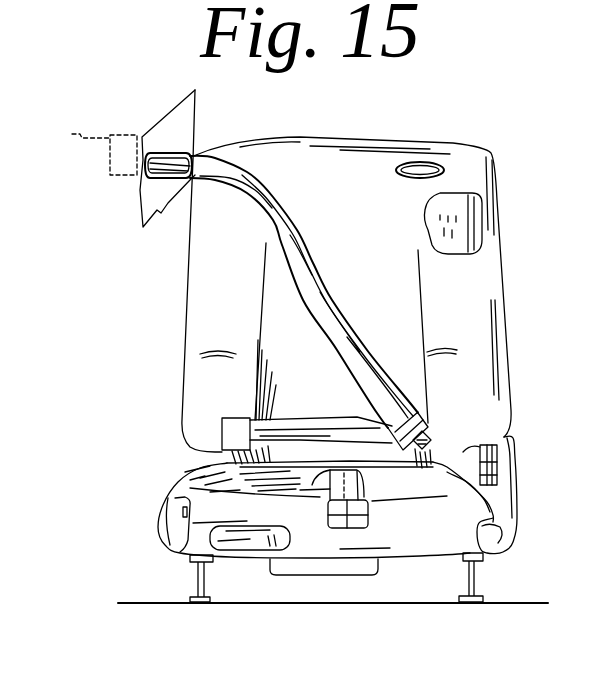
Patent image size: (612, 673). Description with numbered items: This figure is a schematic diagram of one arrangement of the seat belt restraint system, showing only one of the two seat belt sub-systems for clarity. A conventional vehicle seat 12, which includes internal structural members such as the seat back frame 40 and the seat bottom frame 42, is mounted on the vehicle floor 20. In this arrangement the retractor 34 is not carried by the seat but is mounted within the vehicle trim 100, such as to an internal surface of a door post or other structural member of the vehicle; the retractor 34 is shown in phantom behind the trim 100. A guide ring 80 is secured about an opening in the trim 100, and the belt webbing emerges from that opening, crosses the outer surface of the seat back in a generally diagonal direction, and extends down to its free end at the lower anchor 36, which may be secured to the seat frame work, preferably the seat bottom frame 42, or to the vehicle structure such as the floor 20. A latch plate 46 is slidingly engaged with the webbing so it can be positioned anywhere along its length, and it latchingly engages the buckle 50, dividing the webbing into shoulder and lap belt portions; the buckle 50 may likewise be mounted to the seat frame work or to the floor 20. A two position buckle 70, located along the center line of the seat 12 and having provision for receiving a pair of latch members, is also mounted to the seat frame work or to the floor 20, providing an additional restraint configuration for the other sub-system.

The vehicle seat 12 is at (458, 140).
The vehicle floor 20 is at (372, 606).
The retractor 34 is at (90, 144).
The anchor plate 36 is at (232, 432).
The seat back frame 40 is at (468, 207).
The seat bottom frame 42 is at (186, 548).
The latch plate 46 is at (432, 424).
The buckle 50 is at (522, 452).
The two position buckle 70 is at (372, 507).
The guide ring 80 is at (198, 150).
The vehicle trim 100 is at (178, 108).